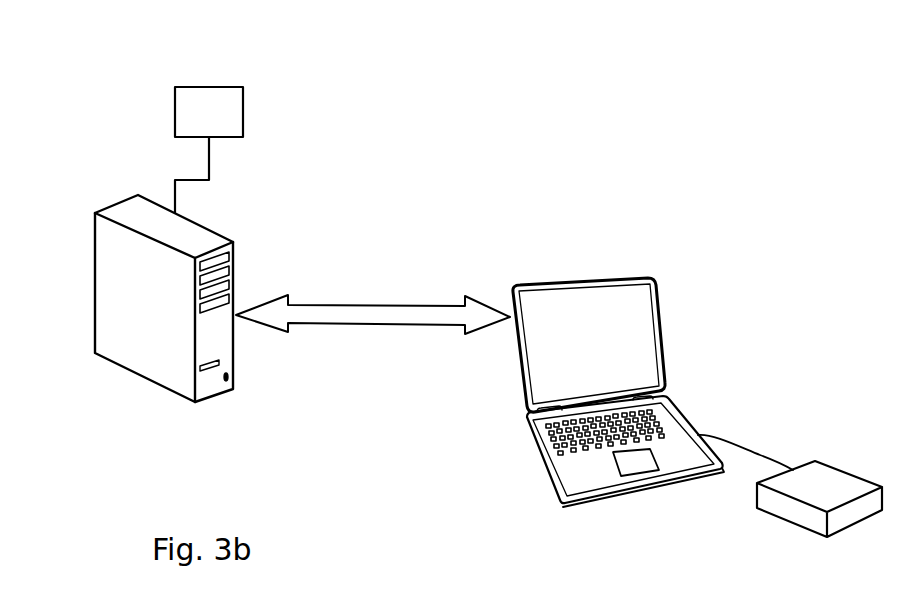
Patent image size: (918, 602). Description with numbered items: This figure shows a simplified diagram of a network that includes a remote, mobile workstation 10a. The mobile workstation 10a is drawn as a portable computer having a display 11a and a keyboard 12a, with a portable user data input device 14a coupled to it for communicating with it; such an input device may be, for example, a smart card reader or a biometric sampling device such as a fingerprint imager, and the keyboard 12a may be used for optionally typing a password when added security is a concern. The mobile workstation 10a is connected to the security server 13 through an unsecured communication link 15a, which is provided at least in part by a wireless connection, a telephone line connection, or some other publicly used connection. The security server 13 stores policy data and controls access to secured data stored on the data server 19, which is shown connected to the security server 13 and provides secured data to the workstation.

The data server 19 is at (192, 87).
The security server 13 is at (95, 258).
The unsecured communication link 15a is at (365, 304).
The display 11a is at (626, 279).
The mobile workstation 10a is at (676, 392).
The keyboard 12a is at (552, 430).
The portable user data input device 14a is at (792, 523).